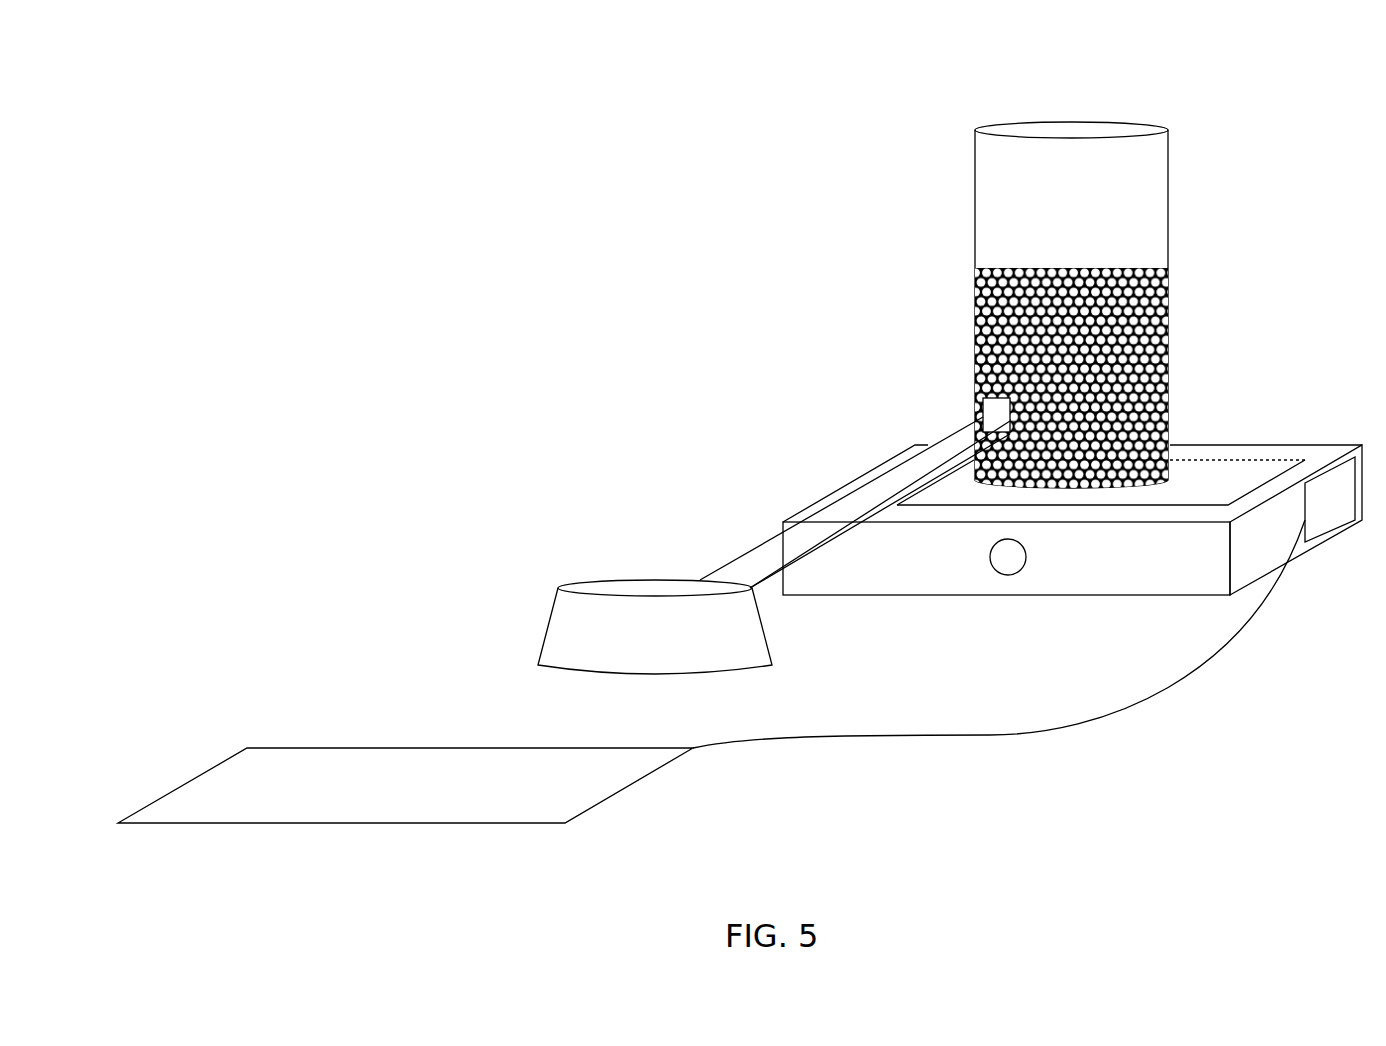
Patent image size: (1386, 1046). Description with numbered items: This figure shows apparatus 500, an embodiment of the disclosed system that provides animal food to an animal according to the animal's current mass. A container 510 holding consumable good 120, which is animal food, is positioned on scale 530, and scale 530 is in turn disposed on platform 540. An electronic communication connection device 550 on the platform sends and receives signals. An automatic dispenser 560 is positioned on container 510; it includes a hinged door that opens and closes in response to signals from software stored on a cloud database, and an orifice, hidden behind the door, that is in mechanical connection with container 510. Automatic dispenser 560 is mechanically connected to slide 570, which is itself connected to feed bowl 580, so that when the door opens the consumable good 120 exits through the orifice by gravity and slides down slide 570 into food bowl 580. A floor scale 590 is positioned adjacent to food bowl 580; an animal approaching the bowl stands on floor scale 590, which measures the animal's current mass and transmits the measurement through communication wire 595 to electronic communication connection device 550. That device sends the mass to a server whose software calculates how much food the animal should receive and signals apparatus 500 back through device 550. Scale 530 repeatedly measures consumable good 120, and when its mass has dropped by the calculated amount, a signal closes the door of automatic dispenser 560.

The apparatus 500 is at (362, 104).
The container 510 is at (1063, 128).
The consumable good 120 is at (1168, 345).
The scale 530 is at (1213, 475).
The platform 540 is at (1065, 565).
The electronic communication connection device 550 is at (1332, 508).
The automatic dispenser 560 is at (993, 410).
The slide 570 is at (750, 547).
The feed bowl 580 is at (540, 618).
The floor scale 590 is at (285, 773).
The communication wire 595 is at (818, 737).